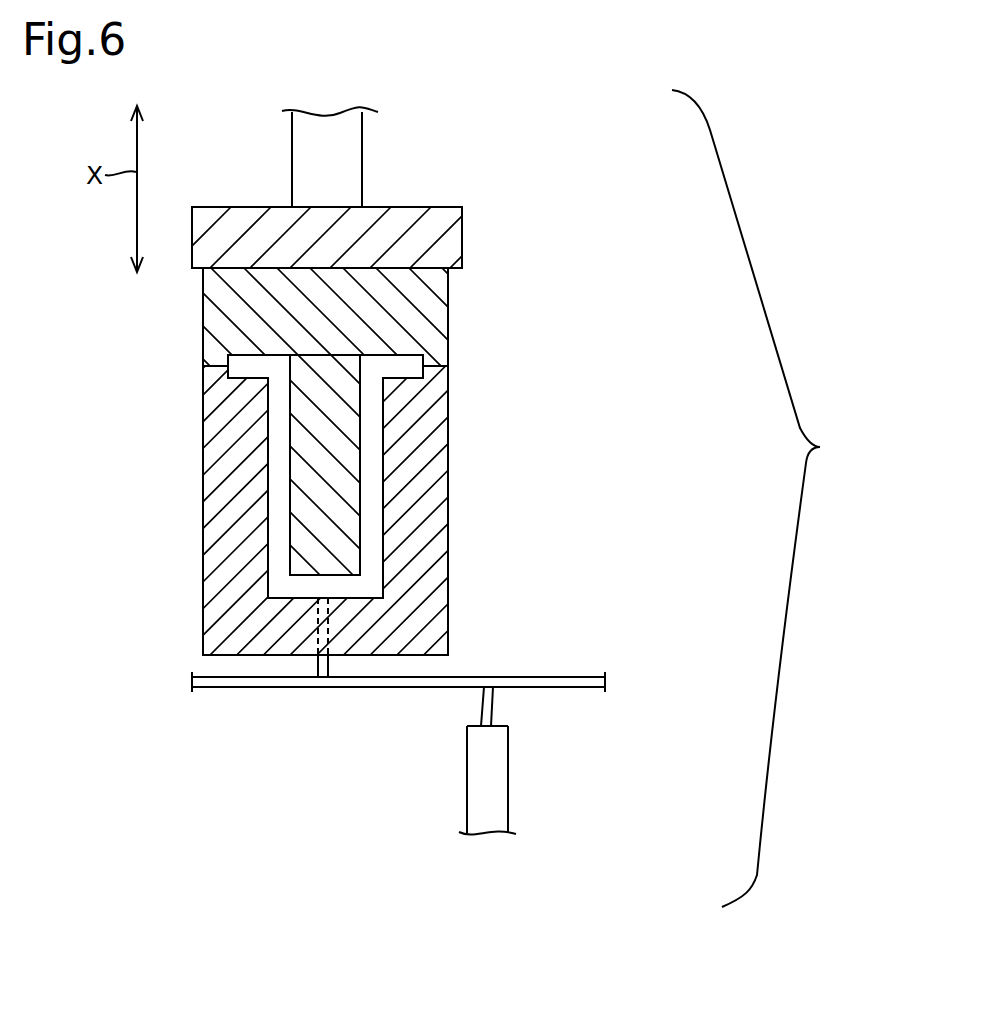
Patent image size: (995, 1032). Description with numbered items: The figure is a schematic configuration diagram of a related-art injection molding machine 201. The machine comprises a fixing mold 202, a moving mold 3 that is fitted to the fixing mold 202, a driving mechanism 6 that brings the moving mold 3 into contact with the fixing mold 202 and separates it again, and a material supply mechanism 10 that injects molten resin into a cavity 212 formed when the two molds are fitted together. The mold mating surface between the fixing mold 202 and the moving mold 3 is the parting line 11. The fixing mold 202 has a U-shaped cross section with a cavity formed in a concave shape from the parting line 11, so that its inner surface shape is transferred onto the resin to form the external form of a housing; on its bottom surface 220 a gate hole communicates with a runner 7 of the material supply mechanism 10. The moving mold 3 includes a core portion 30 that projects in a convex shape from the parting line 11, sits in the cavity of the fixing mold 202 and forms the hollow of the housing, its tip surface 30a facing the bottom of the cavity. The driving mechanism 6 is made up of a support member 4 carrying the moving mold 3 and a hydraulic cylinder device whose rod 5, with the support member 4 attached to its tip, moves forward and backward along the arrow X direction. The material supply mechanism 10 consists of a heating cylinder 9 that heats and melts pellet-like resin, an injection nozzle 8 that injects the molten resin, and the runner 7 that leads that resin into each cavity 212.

The moving mold 3 is at (452, 304).
The support member 4 is at (462, 230).
The rod 5 is at (362, 133).
The driving mechanism 6 is at (441, 168).
The runner 7 is at (467, 673).
The injection nozzle 8 is at (495, 712).
The heating cylinder 9 is at (508, 792).
The material supply mechanism 10 is at (575, 652).
The mold mating surface (parting line) 11 is at (437, 365).
The core portion 30 is at (310, 448).
The tip surface 30a is at (267, 578).
The injection molding machine 201 is at (773, 498).
The fixing mold 202 is at (450, 410).
The cavity 212 is at (370, 468).
The bottom surface 220 is at (357, 592).